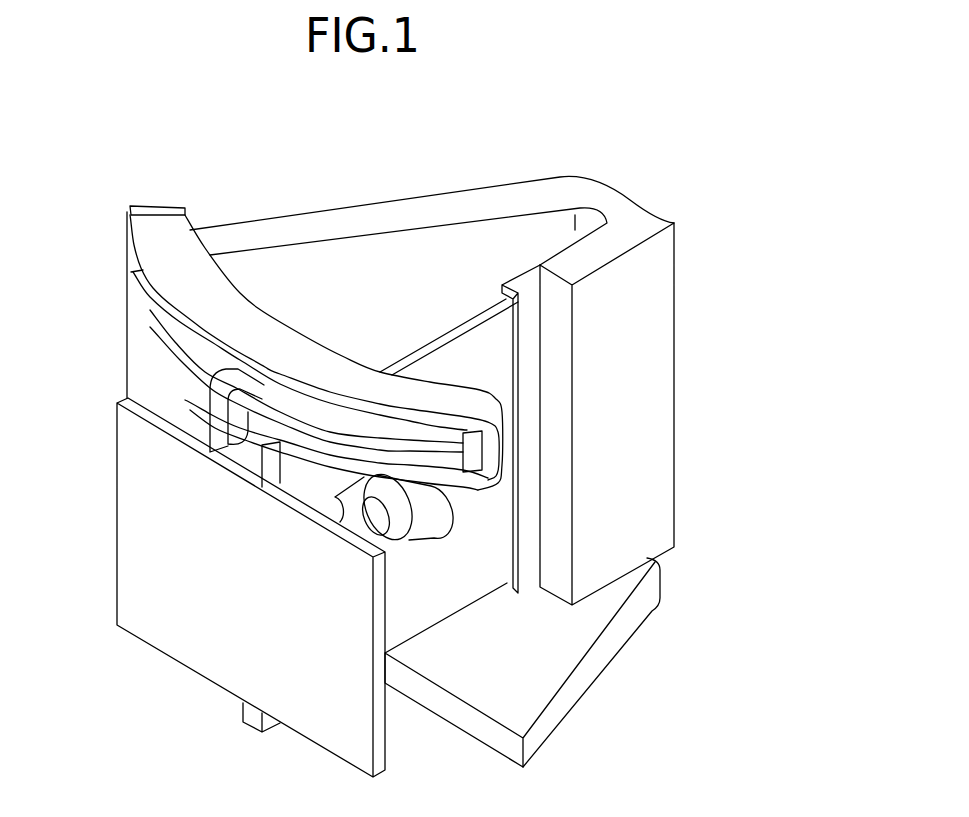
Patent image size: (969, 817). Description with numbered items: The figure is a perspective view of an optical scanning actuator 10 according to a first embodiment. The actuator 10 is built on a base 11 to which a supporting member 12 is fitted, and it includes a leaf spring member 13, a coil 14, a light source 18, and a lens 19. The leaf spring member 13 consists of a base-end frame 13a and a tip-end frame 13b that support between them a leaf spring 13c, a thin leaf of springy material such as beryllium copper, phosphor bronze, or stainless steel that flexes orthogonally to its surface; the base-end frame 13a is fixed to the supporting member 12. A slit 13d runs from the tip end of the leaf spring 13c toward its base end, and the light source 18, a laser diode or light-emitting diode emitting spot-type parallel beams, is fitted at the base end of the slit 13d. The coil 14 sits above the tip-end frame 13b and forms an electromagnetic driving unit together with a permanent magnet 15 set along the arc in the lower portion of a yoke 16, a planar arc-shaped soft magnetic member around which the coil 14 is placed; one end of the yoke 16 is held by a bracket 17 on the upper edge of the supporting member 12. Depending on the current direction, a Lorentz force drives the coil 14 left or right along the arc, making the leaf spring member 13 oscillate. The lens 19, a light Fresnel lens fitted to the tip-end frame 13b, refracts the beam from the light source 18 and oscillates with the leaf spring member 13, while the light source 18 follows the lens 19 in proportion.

The optical scanning actuator 10 is at (646, 142).
The base 11 is at (557, 637).
The supporting member 12 is at (638, 401).
The leaf spring member 13 is at (458, 322).
The base-end frame 13a is at (518, 284).
The tip-end frame 13b is at (258, 463).
The leaf spring 13c is at (490, 515).
The slit 13d is at (335, 523).
The coil 14 is at (218, 421).
The permanent magnet 15 is at (178, 328).
The yoke 16 is at (233, 312).
The bracket 17 is at (157, 208).
The light source 18 is at (430, 520).
The lens 19 is at (188, 625).